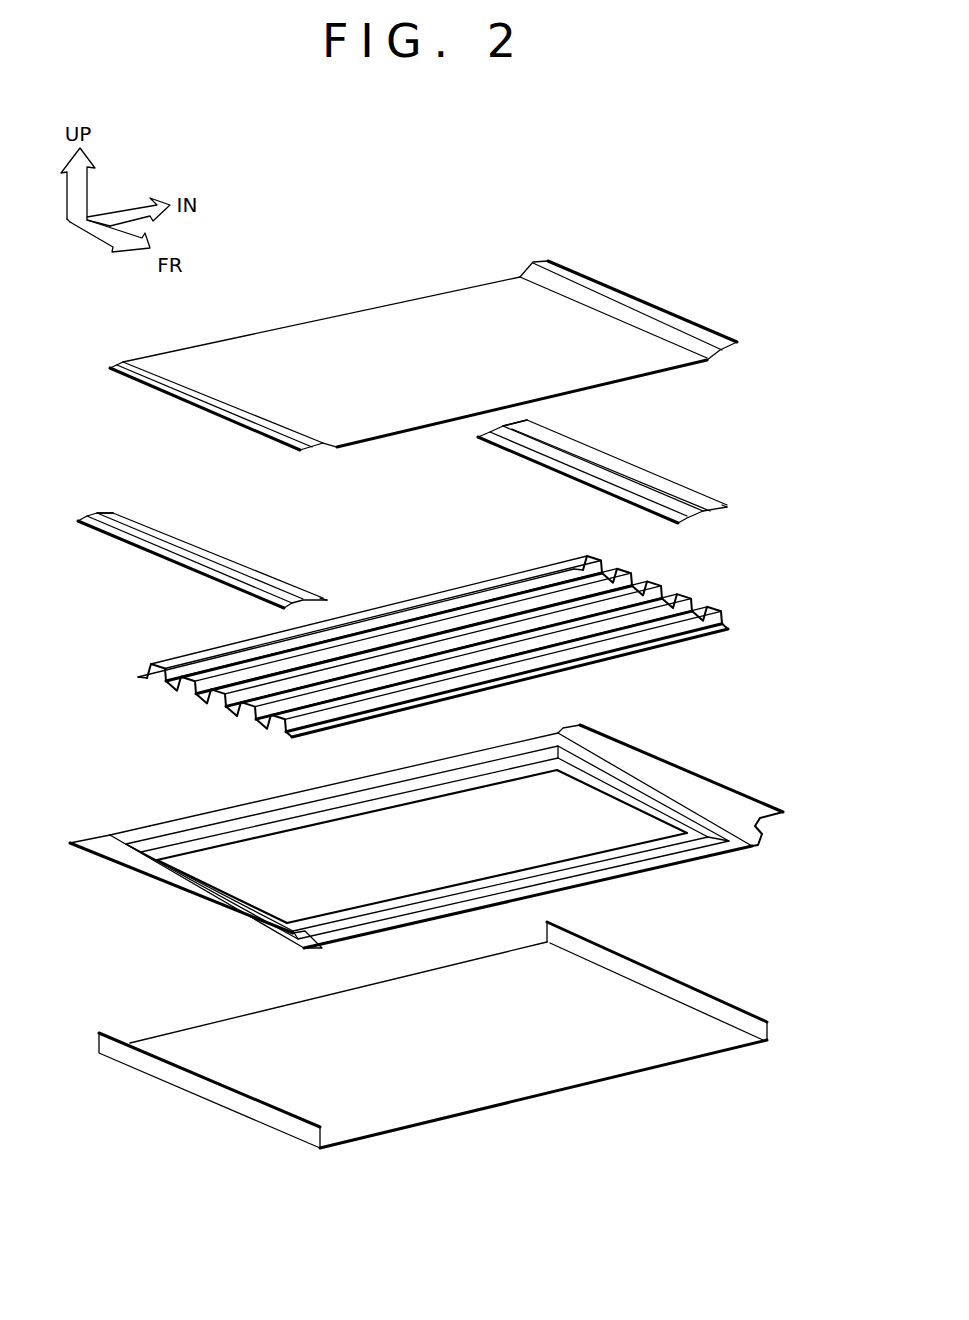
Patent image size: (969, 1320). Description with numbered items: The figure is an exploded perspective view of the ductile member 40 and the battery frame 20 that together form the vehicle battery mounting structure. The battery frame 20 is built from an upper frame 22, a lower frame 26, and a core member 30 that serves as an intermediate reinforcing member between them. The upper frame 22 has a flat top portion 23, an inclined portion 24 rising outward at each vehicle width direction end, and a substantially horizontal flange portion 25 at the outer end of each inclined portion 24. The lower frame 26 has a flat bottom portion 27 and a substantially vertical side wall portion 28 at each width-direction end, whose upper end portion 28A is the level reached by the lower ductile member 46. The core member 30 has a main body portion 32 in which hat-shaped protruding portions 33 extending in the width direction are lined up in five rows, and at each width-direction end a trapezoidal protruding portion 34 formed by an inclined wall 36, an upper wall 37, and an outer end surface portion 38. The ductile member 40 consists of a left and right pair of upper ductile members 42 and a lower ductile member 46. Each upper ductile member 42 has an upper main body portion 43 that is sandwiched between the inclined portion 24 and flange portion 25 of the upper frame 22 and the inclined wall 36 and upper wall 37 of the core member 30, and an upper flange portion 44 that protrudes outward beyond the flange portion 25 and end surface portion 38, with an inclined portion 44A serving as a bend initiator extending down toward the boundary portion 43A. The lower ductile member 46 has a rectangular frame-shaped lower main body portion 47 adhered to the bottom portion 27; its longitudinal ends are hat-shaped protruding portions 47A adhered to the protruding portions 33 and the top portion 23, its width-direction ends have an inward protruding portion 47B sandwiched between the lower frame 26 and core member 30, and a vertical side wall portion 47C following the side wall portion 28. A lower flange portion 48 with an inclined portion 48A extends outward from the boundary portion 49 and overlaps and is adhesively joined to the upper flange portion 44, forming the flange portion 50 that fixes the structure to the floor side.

The battery frame 20 is at (603, 238).
The upper frame 22 is at (430, 298).
The top portion 23 is at (345, 338).
The inclined portion 24 is at (620, 305).
The flange portion 25 is at (690, 318).
The lower frame 26 is at (570, 1093).
The bottom portion 27 is at (445, 1085).
The side wall portion 28 is at (655, 975).
The upper end portion 28A is at (720, 1000).
The core member 30 is at (392, 600).
The main body portion 32 is at (545, 680).
The protruding portions 33 is at (470, 600).
The protruding portions 34 is at (657, 582).
The inclined wall 36 is at (560, 585).
The upper wall 37 is at (722, 582).
The end surface portion 38 is at (722, 622).
The ductile member 40 is at (648, 462).
The upper ductile member 42 is at (432, 514).
The upper main body portion 43 is at (560, 472).
The boundary portion 43A is at (732, 488).
The upper flange portion 44 is at (432, 514).
The inclined portion 44A is at (130, 510).
The lower ductile member 46 is at (448, 806).
The lower main body portion 47 is at (175, 830).
The protruding portions 47A is at (510, 797).
The protruding portion 47B is at (600, 780).
The side wall portion 47C is at (690, 803).
The lower flange portion 48 is at (448, 836).
The inclined portion 48A is at (745, 805).
The boundary portion 49 is at (590, 748).
The flange portion 50 is at (575, 437).